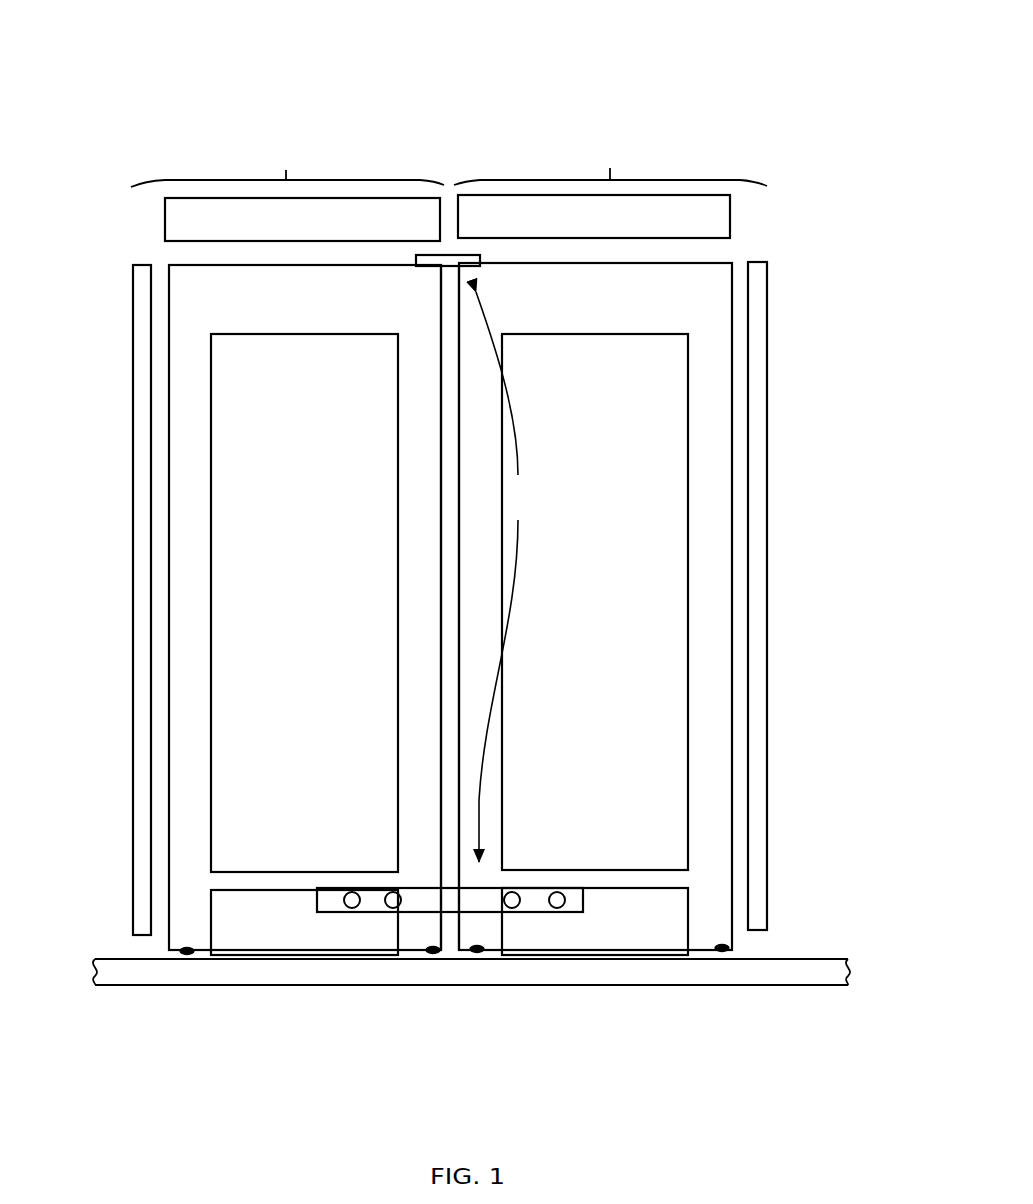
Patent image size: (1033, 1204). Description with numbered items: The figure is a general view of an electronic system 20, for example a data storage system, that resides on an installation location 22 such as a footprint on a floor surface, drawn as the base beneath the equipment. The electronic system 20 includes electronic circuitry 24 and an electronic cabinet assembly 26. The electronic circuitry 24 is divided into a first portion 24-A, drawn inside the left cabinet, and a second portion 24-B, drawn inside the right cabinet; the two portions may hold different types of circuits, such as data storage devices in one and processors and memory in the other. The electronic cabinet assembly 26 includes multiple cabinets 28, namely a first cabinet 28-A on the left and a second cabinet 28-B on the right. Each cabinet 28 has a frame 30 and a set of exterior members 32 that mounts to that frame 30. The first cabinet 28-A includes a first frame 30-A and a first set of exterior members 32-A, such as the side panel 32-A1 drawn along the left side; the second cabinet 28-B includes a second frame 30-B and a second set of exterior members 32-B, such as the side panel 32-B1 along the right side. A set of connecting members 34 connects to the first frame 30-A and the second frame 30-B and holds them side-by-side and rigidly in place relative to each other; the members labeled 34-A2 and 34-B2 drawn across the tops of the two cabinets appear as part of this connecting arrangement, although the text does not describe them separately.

The electronic system 20 is at (792, 68).
The installation location 22 is at (821, 968).
The electronic circuitry 24 is at (750, 232).
The first portion 24-A is at (327, 671).
The second portion 24-B is at (620, 669).
The electronic cabinet assembly 26 is at (426, 145).
The cabinets 28 is at (93, 192).
The first cabinet 28-A is at (287, 164).
The second cabinet 28-B is at (610, 163).
The frame 30 is at (785, 282).
The first frame 30-A is at (370, 314).
The second frame 30-B is at (657, 314).
The set of exterior members 32 is at (798, 362).
The first set of exterior members 32-A is at (88, 305).
The second set of exterior members 32-B is at (786, 475).
The side panel 32-A1 is at (137, 602).
The side panel 32-B1 is at (758, 603).
The set of connecting members 34 is at (447, 528).
The first top member 34-A2 is at (334, 230).
The second top member 34-B2 is at (637, 229).